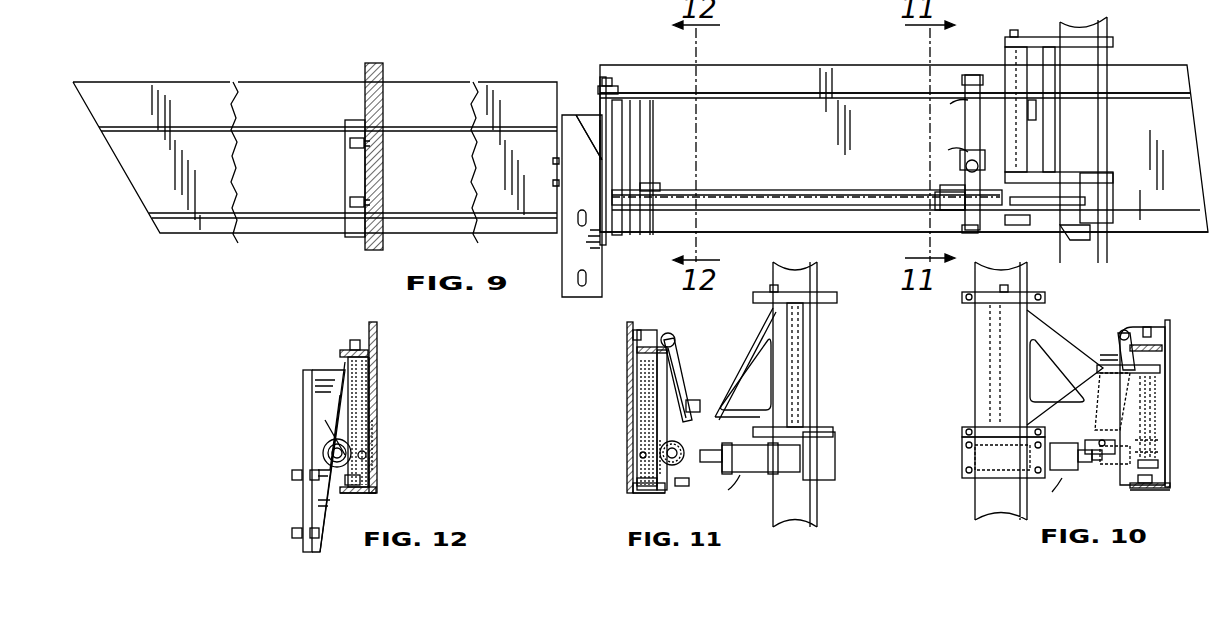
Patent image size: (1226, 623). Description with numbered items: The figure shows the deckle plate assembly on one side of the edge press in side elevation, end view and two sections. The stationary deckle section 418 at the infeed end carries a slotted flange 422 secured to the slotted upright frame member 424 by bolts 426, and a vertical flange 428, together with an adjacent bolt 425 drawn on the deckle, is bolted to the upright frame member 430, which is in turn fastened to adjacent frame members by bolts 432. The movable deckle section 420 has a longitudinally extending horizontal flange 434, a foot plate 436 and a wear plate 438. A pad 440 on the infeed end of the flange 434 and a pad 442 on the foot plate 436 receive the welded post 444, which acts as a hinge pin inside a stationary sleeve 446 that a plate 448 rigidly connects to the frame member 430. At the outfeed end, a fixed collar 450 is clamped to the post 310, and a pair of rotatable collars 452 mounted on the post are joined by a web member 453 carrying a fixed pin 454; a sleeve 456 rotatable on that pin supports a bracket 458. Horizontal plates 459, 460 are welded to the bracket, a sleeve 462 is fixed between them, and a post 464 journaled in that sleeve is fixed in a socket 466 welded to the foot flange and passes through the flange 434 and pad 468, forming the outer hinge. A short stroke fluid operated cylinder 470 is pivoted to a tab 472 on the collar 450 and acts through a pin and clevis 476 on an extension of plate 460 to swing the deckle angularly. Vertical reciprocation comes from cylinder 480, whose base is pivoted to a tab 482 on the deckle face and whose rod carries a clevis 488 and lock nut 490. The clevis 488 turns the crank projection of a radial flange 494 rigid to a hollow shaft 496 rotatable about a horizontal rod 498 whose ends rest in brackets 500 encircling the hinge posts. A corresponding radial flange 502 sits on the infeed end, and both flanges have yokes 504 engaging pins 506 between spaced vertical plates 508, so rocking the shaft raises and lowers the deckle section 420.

In FIG. 9, the post 310 is at (1108, 138).
In FIG. 11, the post 310 is at (818, 365).
In FIG. 10, the post 310 is at (975, 350).
In FIG. 9, the stationary deckle section 418 is at (270, 82).
In FIG. 9, the movable deckle section 420 is at (1167, 65).
In FIG. 12, the movable deckle section 420 is at (370, 382).
In FIG. 11, the movable deckle section 420 is at (640, 400).
In FIG. 10, the movable deckle section 420 is at (1165, 402).
In FIG. 9, the slotted flange 422 is at (345, 185).
In FIG. 9, the slotted upright frame member 424 is at (372, 172).
In FIG. 9, the bolt 425 is at (553, 162).
In FIG. 9, the bolts 426 is at (370, 202).
In FIG. 9, the vertical flange 428 is at (553, 185).
In FIG. 9, the upright frame member 430 is at (565, 280).
In FIG. 12, the upright frame member 430 is at (303, 372).
In FIG. 9, the bolts 432 is at (578, 278).
In FIG. 12, the bolts 432 is at (292, 533).
In FIG. 9, the horizontal flange 434 is at (762, 95).
In FIG. 12, the horizontal flange 434 is at (378, 346).
In FIG. 11, the horizontal flange 434 is at (627, 352).
In FIG. 10, the horizontal flange 434 is at (1170, 336).
In FIG. 9, the foot plate 436 is at (800, 228).
In FIG. 12, the foot plate 436 is at (360, 494).
In FIG. 11, the foot plate 436 is at (650, 494).
In FIG. 10, the foot plate 436 is at (1168, 491).
In FIG. 9, the wear plate 438 is at (828, 235).
In FIG. 12, the wear plate 438 is at (377, 491).
In FIG. 11, the wear plate 438 is at (632, 494).
In FIG. 10, the wear plate 438 is at (1170, 486).
In FIG. 9, the pad 440 is at (617, 90).
In FIG. 12, the pad 440 is at (345, 352).
In FIG. 9, the pad 442 is at (605, 240).
In FIG. 12, the pad 442 is at (360, 478).
In FIG. 9, the post 444 is at (607, 78).
In FIG. 12, the post 444 is at (355, 340).
In FIG. 9, the stationary sleeve 446 is at (598, 141).
In FIG. 12, the stationary sleeve 446 is at (378, 362).
In FIG. 9, the plate 448 is at (582, 120).
In FIG. 12, the plate 448 is at (325, 370).
In FIG. 9, the fixed collar 450 is at (1113, 190).
In FIG. 11, the fixed collar 450 is at (835, 478).
In FIG. 10, the fixed collar 450 is at (962, 480).
In FIG. 9, the rotatable collars 452 is at (1115, 176).
In FIG. 11, the rotatable collars 452 is at (832, 428).
In FIG. 10, the rotatable collars 452 is at (962, 430).
In FIG. 9, the web member 453 is at (1050, 128).
In FIG. 9, the fixed pin 454 is at (1013, 30).
In FIG. 11, the fixed pin 454 is at (775, 283).
In FIG. 10, the fixed pin 454 is at (1010, 290).
In FIG. 9, the sleeve 456 is at (1005, 45).
In FIG. 11, the sleeve 456 is at (803, 322).
In FIG. 11, the bracket 458 is at (745, 372).
In FIG. 10, the bracket 458 is at (1062, 362).
In FIG. 9, the horizontal plate 459 is at (1036, 112).
In FIG. 11, the horizontal plate 459 is at (640, 375).
In FIG. 10, the horizontal plate 459 is at (1162, 374).
In FIG. 10, the horizontal plate 460 is at (1108, 470).
In FIG. 10, the sleeve 462 is at (1163, 428).
In FIG. 11, the post 464 is at (660, 330).
In FIG. 10, the post 464 is at (1147, 327).
In FIG. 9, the socket 466 is at (1020, 226).
In FIG. 11, the socket 466 is at (682, 482).
In FIG. 10, the socket 466 is at (1138, 486).
In FIG. 11, the pad 468 is at (633, 335).
In FIG. 10, the pad 468 is at (1137, 333).
In FIG. 9, the fluid operated cylinder 470 is at (1075, 228).
In FIG. 11, the fluid operated cylinder 470 is at (742, 476).
In FIG. 10, the fluid operated cylinder 470 is at (1060, 480).
In FIG. 9, the tab 472 is at (1050, 198).
In FIG. 11, the tab 472 is at (835, 458).
In FIG. 10, the tab 472 is at (1071, 456).
In FIG. 11, the pin and clevis 476 is at (705, 462).
In FIG. 10, the pin and clevis 476 is at (1095, 465).
In FIG. 9, the cylinder 480 is at (968, 120).
In FIG. 11, the cylinder 480 is at (690, 356).
In FIG. 10, the cylinder 480 is at (1118, 345).
In FIG. 9, the tab 482 is at (972, 75).
In FIG. 11, the tab 482 is at (672, 334).
In FIG. 10, the tab 482 is at (1158, 327).
In FIG. 9, the clevis 488 is at (940, 188).
In FIG. 11, the clevis 488 is at (705, 445).
In FIG. 10, the clevis 488 is at (1099, 440).
In FIG. 9, the lock nut 490 is at (968, 178).
In FIG. 11, the lock nut 490 is at (700, 412).
In FIG. 9, the radial flange 494 is at (935, 205).
In FIG. 11, the radial flange 494 is at (640, 482).
In FIG. 9, the hollow shaft 496 is at (752, 190).
In FIG. 12, the hollow shaft 496 is at (323, 450).
In FIG. 9, the horizontal rod 498 is at (622, 210).
In FIG. 12, the horizontal rod 498 is at (325, 460).
In FIG. 9, the brackets 500 is at (617, 130).
In FIG. 12, the brackets 500 is at (338, 420).
In FIG. 11, the brackets 500 is at (650, 410).
In FIG. 10, the brackets 500 is at (1160, 464).
In FIG. 9, the radial flange 502 is at (645, 183).
In FIG. 12, the radial flange 502 is at (325, 445).
In FIG. 12, the yokes 504 is at (373, 440).
In FIG. 11, the yokes 504 is at (658, 472).
In FIG. 10, the yokes 504 is at (1165, 446).
In FIG. 12, the pins 506 is at (366, 455).
In FIG. 11, the pins 506 is at (640, 462).
In FIG. 9, the vertical plates 508 is at (633, 145).
In FIG. 12, the vertical plates 508 is at (360, 415).
In FIG. 11, the vertical plates 508 is at (655, 428).